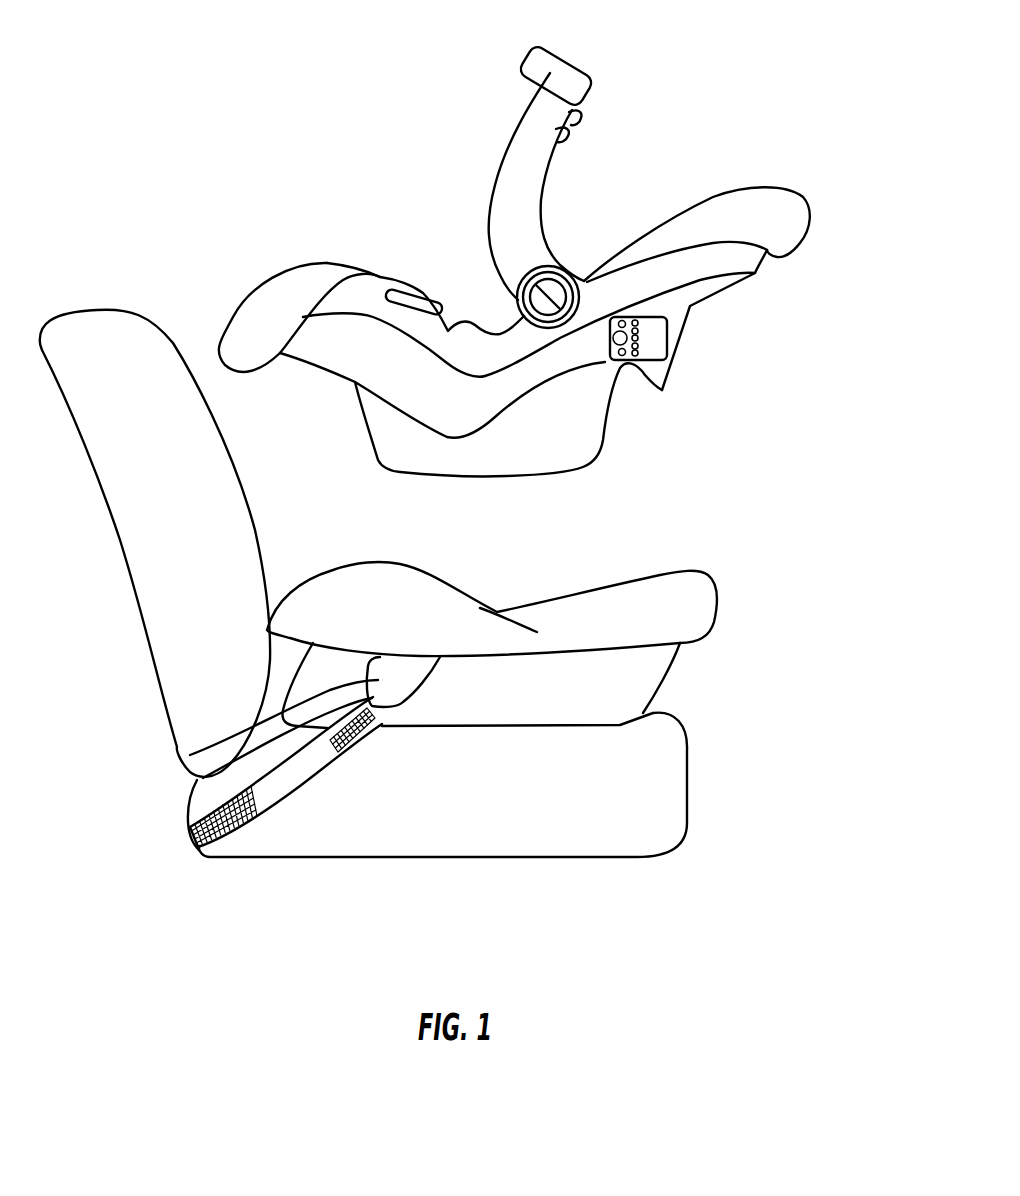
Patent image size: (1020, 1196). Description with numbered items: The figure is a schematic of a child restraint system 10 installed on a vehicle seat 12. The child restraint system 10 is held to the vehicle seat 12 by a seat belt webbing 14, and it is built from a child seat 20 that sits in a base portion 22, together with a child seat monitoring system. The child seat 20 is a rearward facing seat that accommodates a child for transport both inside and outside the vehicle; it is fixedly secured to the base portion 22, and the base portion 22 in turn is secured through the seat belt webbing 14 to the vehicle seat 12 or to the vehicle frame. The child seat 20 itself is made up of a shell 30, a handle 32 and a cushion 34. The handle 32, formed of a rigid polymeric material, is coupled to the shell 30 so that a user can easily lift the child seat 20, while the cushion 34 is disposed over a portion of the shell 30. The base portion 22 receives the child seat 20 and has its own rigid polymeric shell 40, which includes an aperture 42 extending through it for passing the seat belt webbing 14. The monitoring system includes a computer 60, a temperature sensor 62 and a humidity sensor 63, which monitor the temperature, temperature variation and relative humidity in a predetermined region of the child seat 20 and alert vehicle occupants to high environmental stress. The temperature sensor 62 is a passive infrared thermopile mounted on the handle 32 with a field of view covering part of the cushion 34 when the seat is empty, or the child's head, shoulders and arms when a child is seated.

The child restraint system 10 is at (831, 237).
The vehicle seat 12 is at (667, 830).
The seat belt webbing 14 is at (255, 805).
The child seat 20 is at (763, 287).
The base portion 22 is at (703, 647).
The shell 30 is at (613, 407).
The handle 32 is at (575, 73).
The cushion 34 is at (675, 224).
The shell 40 is at (700, 706).
The aperture 42 is at (190, 755).
The computer 60 is at (667, 342).
The temperature sensor 62 is at (581, 118).
The humidity sensor 63 is at (566, 140).